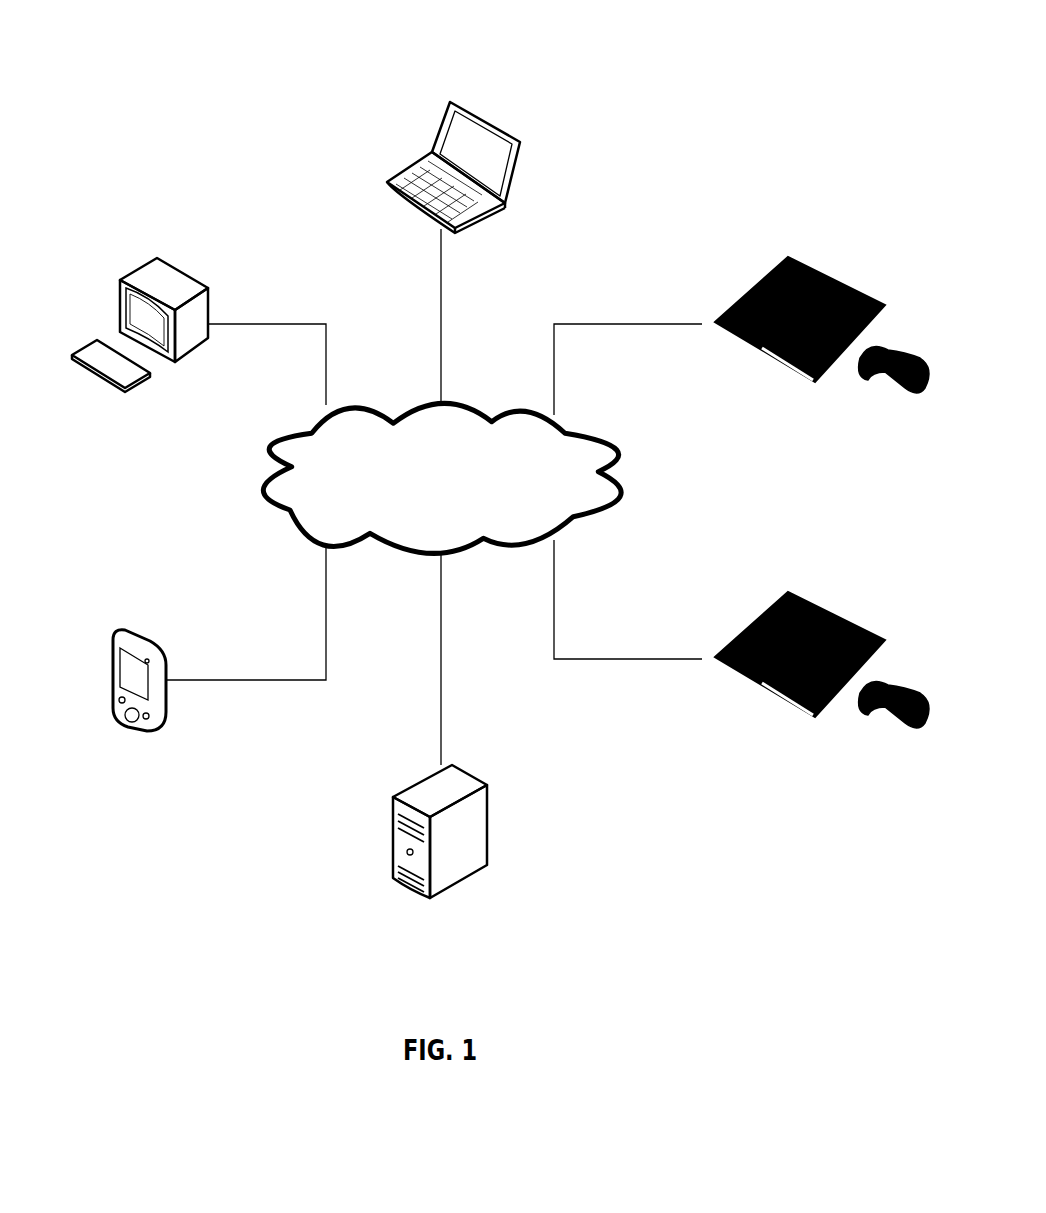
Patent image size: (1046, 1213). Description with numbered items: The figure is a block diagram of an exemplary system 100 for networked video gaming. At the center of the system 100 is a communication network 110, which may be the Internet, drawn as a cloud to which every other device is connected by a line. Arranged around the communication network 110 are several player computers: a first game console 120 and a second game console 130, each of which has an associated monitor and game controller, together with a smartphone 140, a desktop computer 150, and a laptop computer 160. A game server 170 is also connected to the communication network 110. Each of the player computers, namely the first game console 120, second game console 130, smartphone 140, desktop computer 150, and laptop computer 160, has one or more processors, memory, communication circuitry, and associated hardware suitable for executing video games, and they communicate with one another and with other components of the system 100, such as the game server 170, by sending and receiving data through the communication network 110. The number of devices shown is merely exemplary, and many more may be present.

The system 100 is at (445, 26).
The communication network 110 is at (260, 478).
The first game console 120 is at (820, 715).
The second game console 130 is at (824, 380).
The smartphone 140 is at (142, 731).
The desktop computer 150 is at (129, 392).
The laptop computer 160 is at (490, 217).
The game server 170 is at (449, 892).